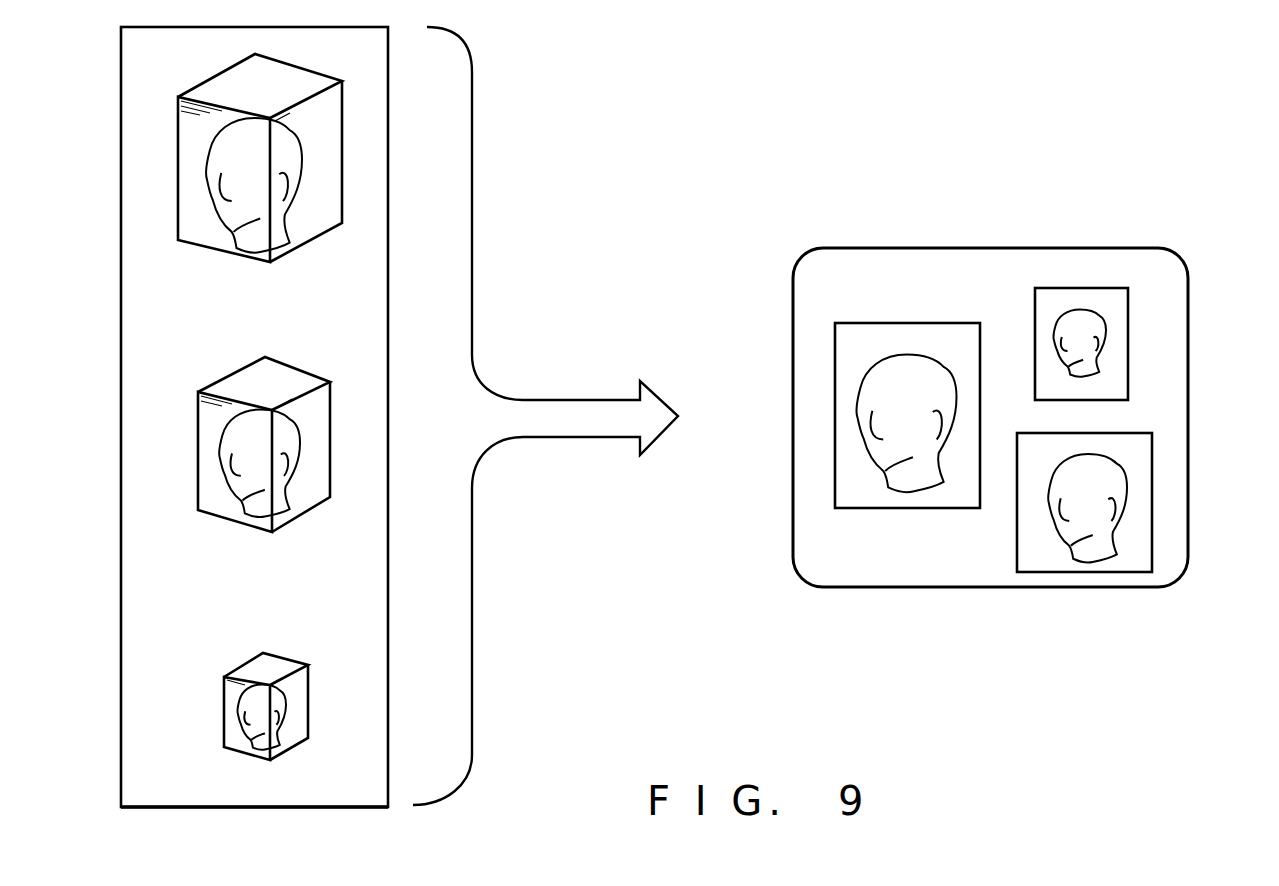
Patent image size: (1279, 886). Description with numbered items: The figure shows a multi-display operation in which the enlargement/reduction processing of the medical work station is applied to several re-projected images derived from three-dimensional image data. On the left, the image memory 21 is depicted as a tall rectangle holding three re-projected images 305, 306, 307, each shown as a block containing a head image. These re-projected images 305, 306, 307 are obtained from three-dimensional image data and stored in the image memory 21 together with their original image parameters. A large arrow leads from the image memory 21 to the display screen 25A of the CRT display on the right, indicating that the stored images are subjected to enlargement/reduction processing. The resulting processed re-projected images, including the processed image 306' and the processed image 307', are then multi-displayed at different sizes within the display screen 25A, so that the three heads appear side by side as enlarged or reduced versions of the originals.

The image memory 21 is at (121, 57).
The re-projected image 305 is at (342, 180).
The re-projected image 306 is at (331, 444).
The re-projected image 307 is at (344, 706).
The display screen 25A is at (1057, 247).
The processed re-projected image 306' is at (1143, 502).
The processed re-projected image 307' is at (907, 485).